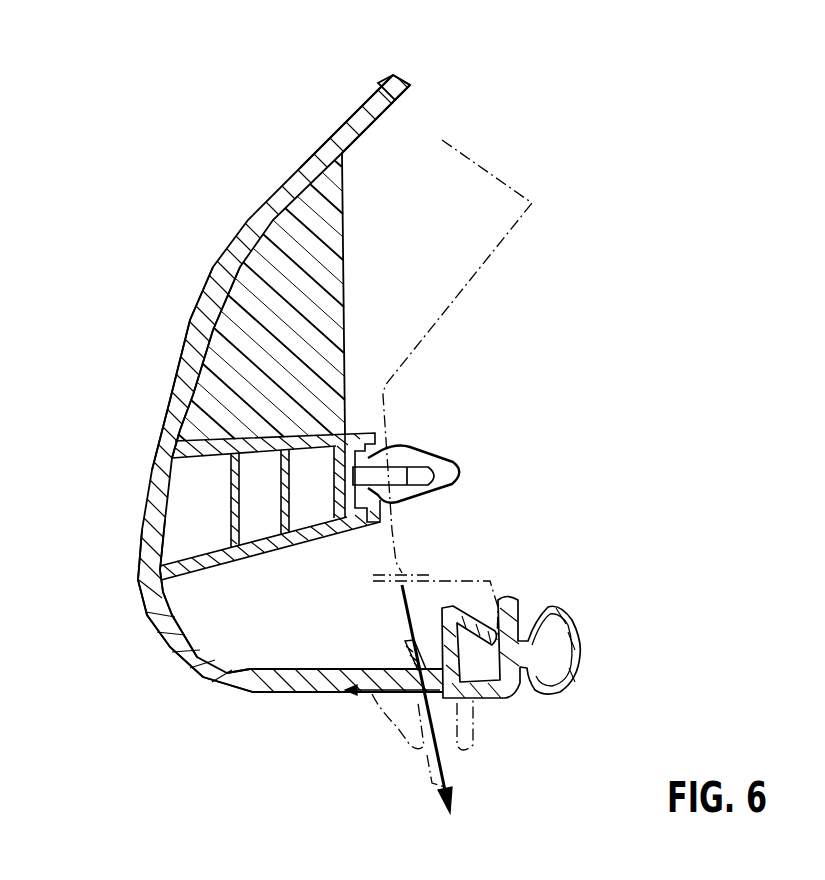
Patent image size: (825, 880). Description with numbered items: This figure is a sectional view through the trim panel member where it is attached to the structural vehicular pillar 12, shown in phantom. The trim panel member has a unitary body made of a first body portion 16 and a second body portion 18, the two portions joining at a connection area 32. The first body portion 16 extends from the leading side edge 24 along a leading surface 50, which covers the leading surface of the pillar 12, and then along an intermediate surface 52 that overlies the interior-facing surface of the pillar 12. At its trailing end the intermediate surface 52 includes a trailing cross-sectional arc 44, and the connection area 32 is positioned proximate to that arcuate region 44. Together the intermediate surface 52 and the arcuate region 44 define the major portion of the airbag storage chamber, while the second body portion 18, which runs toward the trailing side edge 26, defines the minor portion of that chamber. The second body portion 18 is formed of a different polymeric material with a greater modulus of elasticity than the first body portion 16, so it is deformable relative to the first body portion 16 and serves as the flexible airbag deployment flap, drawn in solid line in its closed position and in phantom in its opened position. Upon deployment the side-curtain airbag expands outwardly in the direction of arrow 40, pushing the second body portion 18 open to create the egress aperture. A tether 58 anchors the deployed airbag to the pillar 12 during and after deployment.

The pillar 12 is at (443, 404).
The first body portion 16 is at (180, 287).
The second body portion 18 is at (345, 703).
The leading side edge 24 is at (400, 81).
The trailing side edge 26 is at (456, 786).
The connection area 32 is at (287, 670).
The arrow 40 is at (407, 622).
The trailing cross-sectional arc 44 is at (192, 675).
The leading surface 50 is at (293, 176).
The intermediate surface 52 is at (165, 433).
The tether 58 is at (428, 573).